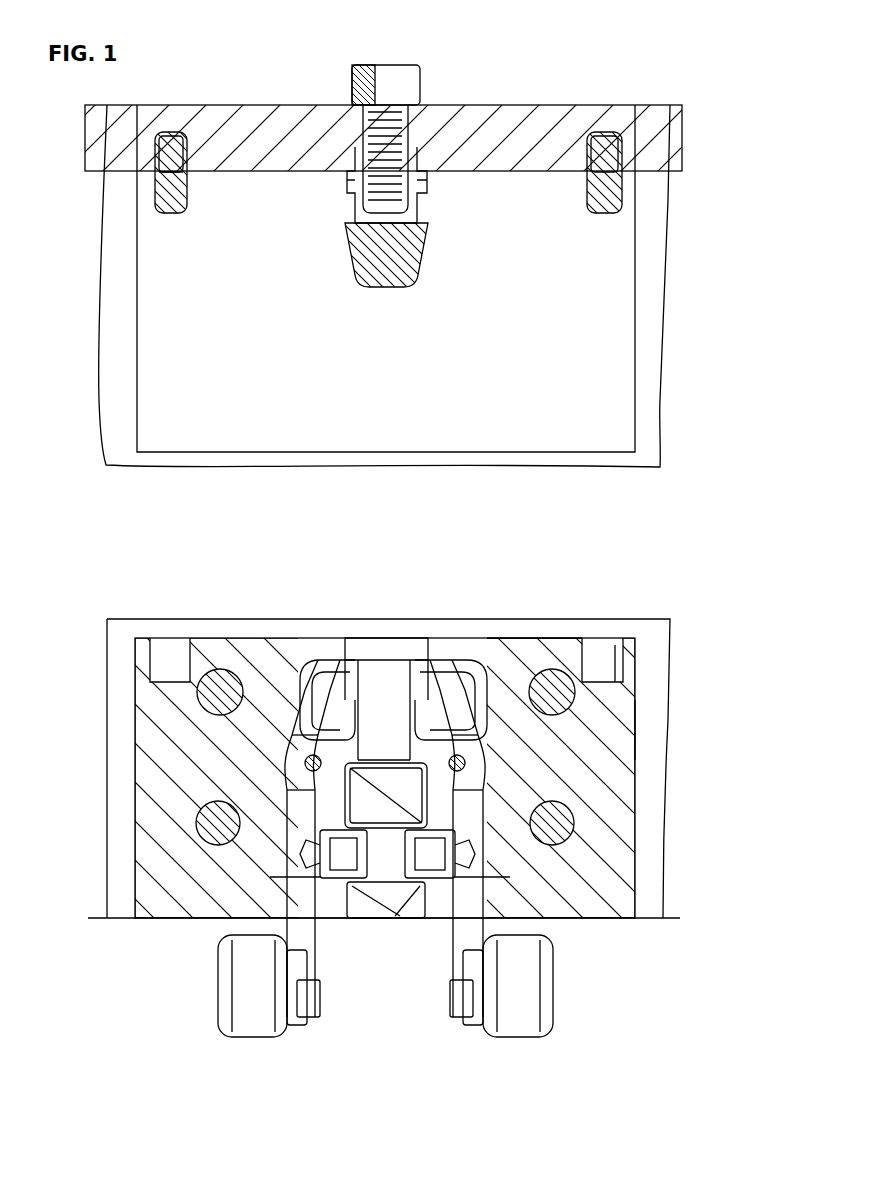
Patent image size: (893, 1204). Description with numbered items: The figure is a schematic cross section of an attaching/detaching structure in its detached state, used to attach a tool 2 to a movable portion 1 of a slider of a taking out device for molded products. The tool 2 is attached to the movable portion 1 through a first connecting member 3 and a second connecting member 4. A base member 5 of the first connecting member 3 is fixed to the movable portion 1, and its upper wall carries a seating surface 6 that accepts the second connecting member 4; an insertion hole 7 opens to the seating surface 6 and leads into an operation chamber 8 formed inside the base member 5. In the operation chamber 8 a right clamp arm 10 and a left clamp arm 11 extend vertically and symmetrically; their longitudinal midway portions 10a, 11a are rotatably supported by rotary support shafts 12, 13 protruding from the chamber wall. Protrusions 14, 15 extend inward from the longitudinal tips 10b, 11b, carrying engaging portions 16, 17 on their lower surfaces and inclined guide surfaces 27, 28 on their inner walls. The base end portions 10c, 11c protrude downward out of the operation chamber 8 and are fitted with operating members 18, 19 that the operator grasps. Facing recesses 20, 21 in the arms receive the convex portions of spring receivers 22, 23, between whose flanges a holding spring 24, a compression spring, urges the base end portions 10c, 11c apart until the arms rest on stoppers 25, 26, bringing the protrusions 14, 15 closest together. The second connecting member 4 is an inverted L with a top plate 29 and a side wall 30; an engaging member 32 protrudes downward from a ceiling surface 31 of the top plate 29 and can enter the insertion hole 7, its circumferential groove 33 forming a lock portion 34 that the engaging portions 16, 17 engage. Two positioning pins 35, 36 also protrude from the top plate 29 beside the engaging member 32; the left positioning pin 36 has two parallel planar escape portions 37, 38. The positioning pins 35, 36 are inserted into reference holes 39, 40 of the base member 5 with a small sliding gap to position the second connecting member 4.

The movable portion 1 is at (672, 652).
The tool 2 is at (653, 158).
The first connecting member 3 is at (654, 697).
The second connecting member 4 is at (648, 112).
The base member 5 is at (640, 725).
The seating surface 6 is at (556, 640).
The insertion hole 7 is at (440, 622).
The operation chamber 8 is at (385, 680).
The clamp arm 10 is at (485, 759).
The longitudinal midway portion 10a is at (538, 810).
The longitudinal tip 10b is at (466, 722).
The longitudinal base end portion 10c is at (455, 935).
The clamp arm 11 is at (287, 759).
The longitudinal midway portion 11a is at (236, 810).
The longitudinal tip 11b is at (308, 722).
The longitudinal base end portion 11c is at (312, 935).
The rotary support shaft 12 is at (465, 766).
The rotary support shaft 13 is at (305, 766).
The protrusion 14 is at (452, 686).
The protrusion 15 is at (320, 686).
The engaging portion 16 is at (386, 782).
The engaging portion 17 is at (386, 774).
The operating member 18 is at (543, 1015).
The operating member 19 is at (228, 1015).
The recess 20 is at (457, 852).
The recess 21 is at (318, 852).
The spring receiver 22 is at (457, 868).
The spring receiver 23 is at (318, 868).
The holding spring 24 is at (395, 918).
The stopper 25 is at (478, 905).
The stopper 26 is at (297, 905).
The guide surface 27 is at (405, 680).
The guide surface 28 is at (372, 690).
The top plate 29 is at (595, 100).
The side wall 30 is at (612, 223).
The ceiling surface 31 is at (530, 173).
The engaging member 32 is at (420, 262).
The groove 33 is at (430, 180).
The lock portion 34 is at (427, 208).
The positioning pin 35 is at (612, 192).
The positioning pin 36 is at (152, 198).
The escape portion 37 is at (188, 193).
The escape portion 38 is at (152, 187).
The reference hole 39 is at (598, 655).
The reference hole 40 is at (170, 655).